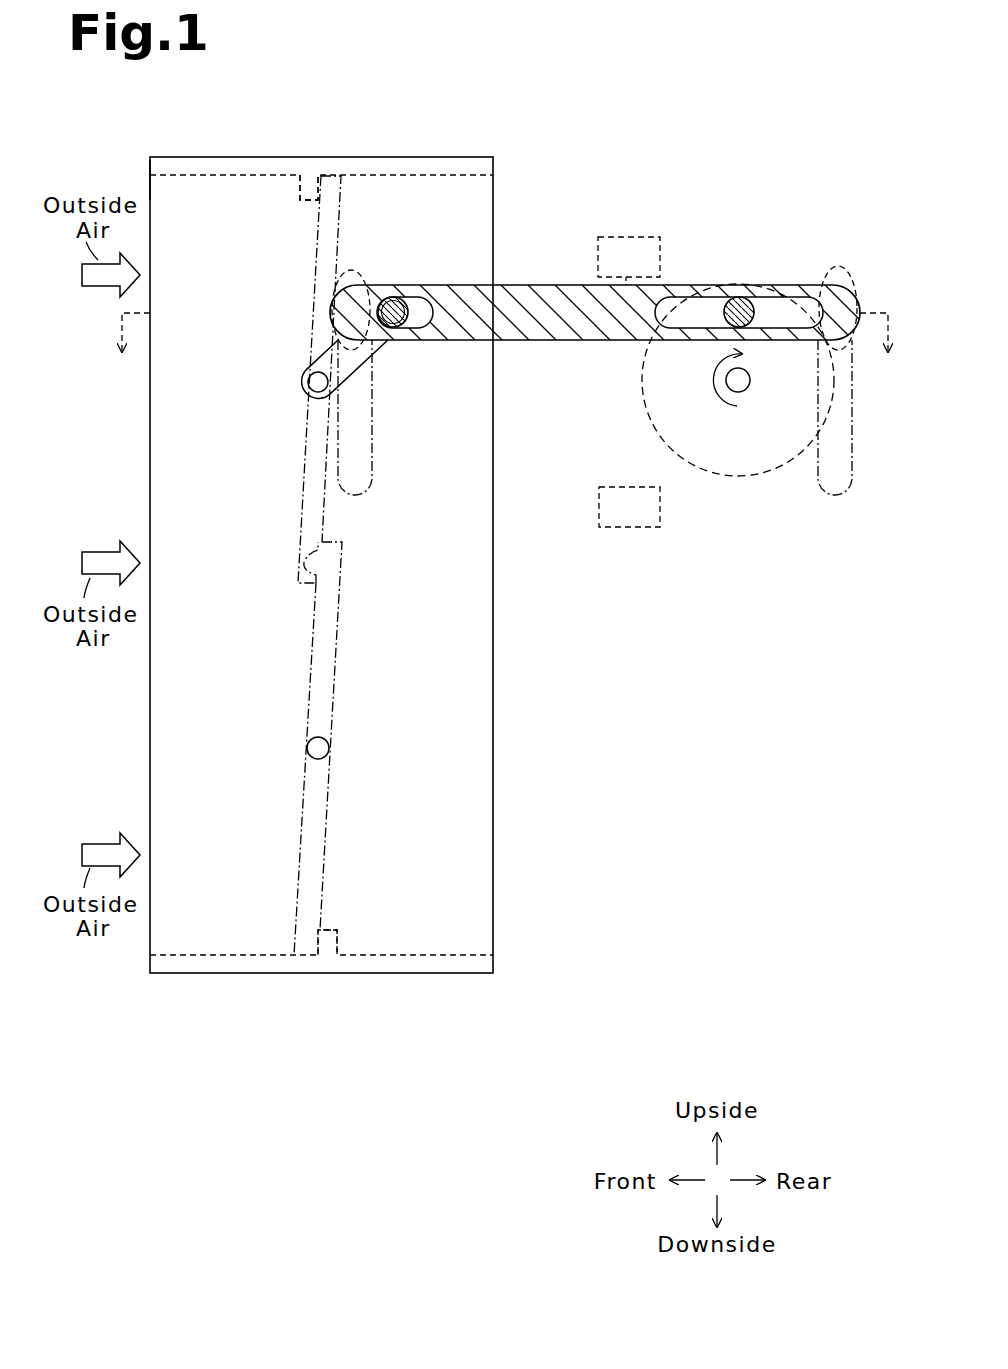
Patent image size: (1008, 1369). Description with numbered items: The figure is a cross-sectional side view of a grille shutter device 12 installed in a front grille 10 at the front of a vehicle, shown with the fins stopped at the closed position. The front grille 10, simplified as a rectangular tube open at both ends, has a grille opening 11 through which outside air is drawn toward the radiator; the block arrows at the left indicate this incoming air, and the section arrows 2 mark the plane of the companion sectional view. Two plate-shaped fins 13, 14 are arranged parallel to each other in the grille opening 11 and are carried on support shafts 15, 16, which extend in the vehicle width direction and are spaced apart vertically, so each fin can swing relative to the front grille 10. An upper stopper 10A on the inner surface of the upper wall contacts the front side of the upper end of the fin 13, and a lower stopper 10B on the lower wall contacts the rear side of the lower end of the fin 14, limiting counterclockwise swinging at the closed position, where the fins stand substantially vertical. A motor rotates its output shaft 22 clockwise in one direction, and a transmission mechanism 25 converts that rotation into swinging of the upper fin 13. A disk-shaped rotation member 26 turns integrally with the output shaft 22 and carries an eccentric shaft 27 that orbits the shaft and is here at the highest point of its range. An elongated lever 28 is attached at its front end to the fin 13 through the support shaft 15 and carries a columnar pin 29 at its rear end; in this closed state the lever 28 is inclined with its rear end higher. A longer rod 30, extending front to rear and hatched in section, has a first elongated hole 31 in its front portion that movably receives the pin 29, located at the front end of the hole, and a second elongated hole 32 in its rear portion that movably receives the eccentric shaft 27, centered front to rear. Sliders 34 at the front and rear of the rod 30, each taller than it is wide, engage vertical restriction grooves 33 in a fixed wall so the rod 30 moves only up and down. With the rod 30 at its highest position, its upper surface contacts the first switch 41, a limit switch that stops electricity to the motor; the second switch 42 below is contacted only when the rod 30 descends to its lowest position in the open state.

The front grille 10 is at (192, 157).
The grille opening 11 is at (150, 182).
The upper stopper 10A is at (300, 186).
The lower stopper 10B is at (340, 932).
The fin 13 is at (310, 272).
The fin 14 is at (300, 822).
The support shaft 15 is at (307, 383).
The support shaft 16 is at (306, 746).
The transmission mechanism 25 is at (668, 190).
The grille shutter device 12 is at (584, 362).
The output shaft 22 is at (750, 385).
The rotation member 26 is at (733, 477).
The eccentric shaft 27 is at (739, 297).
The lever 28 is at (356, 376).
The pin 29 is at (395, 297).
The rod 30 is at (545, 340).
The first elongated hole 31 is at (426, 297).
The second elongated hole 32 is at (792, 297).
The restriction groove 33 is at (361, 492).
The slider 34 is at (351, 270).
The first switch 41 is at (612, 236).
The second switch 42 is at (622, 527).
The section line for FIG. 2 is at (503, 350).